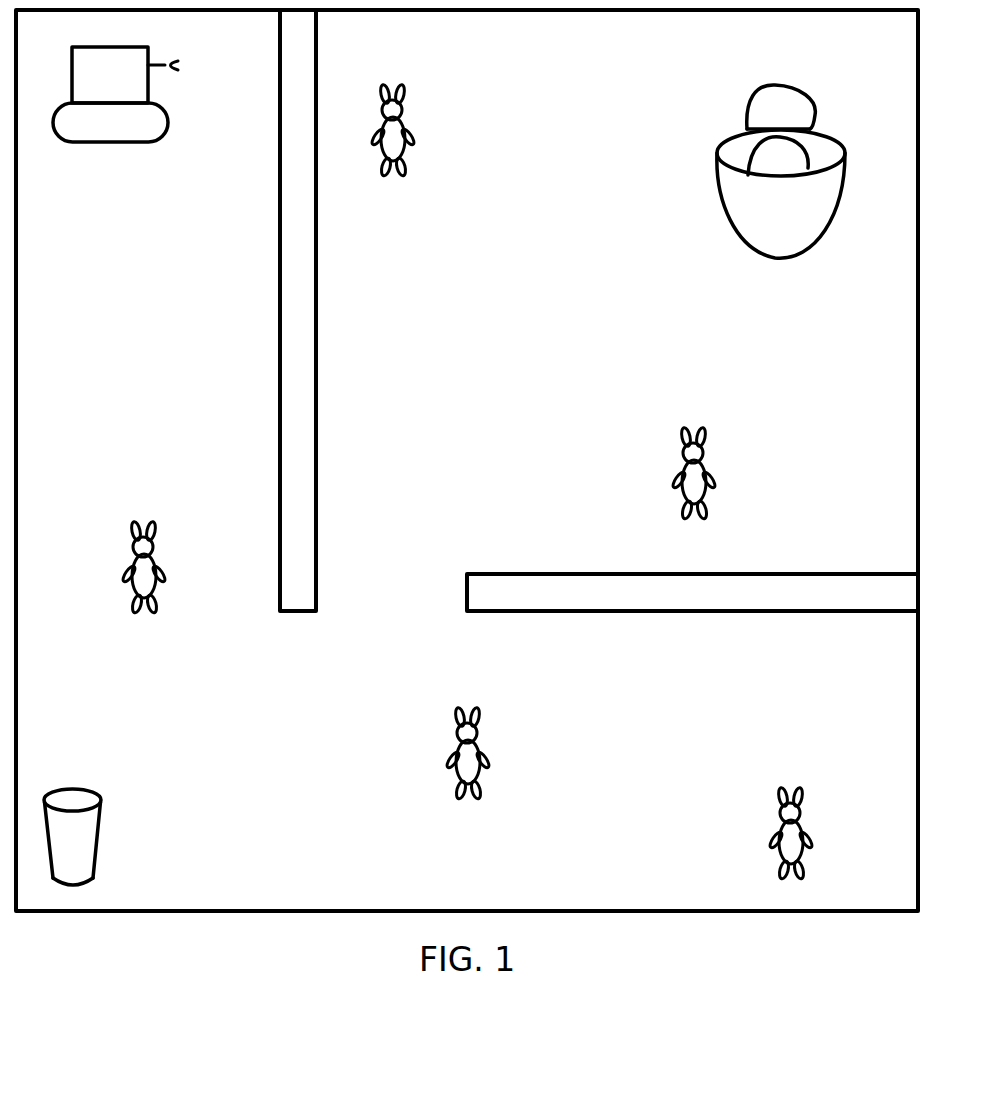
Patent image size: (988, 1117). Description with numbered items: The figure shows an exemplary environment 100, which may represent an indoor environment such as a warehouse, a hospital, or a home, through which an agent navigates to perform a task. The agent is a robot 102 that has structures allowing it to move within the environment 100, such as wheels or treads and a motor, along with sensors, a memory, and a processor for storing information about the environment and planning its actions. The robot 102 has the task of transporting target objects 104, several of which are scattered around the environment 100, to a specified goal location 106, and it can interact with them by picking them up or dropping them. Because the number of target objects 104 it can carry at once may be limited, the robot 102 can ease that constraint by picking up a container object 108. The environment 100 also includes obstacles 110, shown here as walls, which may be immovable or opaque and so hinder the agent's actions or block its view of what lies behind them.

The environment 100 is at (904, 61).
The robot 102 is at (112, 143).
The target object 104 is at (406, 121).
The goal location 106 is at (97, 838).
The container object 108 is at (785, 258).
The obstacle 110 is at (318, 440).